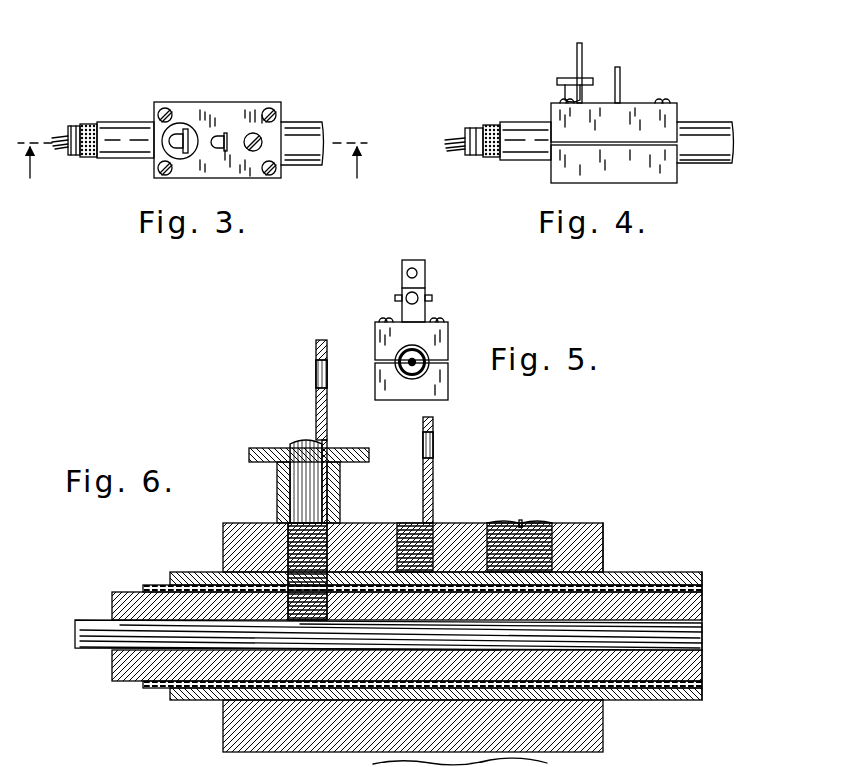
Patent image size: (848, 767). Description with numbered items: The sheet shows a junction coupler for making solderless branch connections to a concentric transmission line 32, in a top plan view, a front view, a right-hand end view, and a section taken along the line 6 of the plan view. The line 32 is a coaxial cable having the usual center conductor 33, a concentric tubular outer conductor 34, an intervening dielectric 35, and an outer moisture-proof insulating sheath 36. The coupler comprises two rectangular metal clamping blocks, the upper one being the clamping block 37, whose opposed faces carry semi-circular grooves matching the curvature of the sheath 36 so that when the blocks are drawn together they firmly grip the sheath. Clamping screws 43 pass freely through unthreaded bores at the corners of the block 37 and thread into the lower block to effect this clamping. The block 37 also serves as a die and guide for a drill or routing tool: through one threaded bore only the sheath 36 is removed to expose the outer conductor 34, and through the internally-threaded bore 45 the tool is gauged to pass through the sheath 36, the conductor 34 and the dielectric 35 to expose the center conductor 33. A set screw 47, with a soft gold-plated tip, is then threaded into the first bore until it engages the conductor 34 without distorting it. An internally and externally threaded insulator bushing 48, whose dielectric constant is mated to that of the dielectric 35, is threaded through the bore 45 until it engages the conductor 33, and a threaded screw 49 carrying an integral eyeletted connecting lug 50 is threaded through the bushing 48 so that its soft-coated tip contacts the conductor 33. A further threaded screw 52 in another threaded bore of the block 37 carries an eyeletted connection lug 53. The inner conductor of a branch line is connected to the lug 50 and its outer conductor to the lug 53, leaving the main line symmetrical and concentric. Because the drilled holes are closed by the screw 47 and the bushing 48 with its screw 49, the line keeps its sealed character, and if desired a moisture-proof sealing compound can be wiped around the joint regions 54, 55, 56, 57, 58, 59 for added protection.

In FIG. 3, the section line 6— 6 is at (192, 173).
In FIG. 3, the concentric transmission line 32 is at (312, 122).
In FIG. 4, the concentric transmission line 32 is at (712, 120).
In FIG. 5, the concentric transmission line 32 is at (437, 377).
In FIG. 6, the concentric transmission line 32 is at (680, 575).
In FIG. 3, the center conductor 33 is at (62, 140).
In FIG. 4, the center conductor 33 is at (452, 142).
In FIG. 5, the center conductor 33 is at (412, 368).
In FIG. 6, the center conductor 33 is at (75, 638).
In FIG. 3, the tubular outer conductor 34 is at (88, 124).
In FIG. 4, the tubular outer conductor 34 is at (492, 152).
In FIG. 5, the tubular outer conductor 34 is at (397, 362).
In FIG. 6, the tubular outer conductor 34 is at (160, 585).
In FIG. 3, the dielectric 35 is at (74, 126).
In FIG. 4, the dielectric 35 is at (475, 150).
In FIG. 6, the dielectric 35 is at (118, 592).
In FIG. 3, the outer insulating sheath 36 is at (120, 122).
In FIG. 4, the outer insulating sheath 36 is at (532, 152).
In FIG. 6, the outer insulating sheath 36 is at (198, 572).
In FIG. 3, the clamping block 37 is at (268, 172).
In FIG. 3, the clamping screws 43 is at (165, 108).
In FIG. 4, the clamping screws 43 is at (562, 100).
In FIG. 5, the clamping screws 43 is at (382, 322).
In FIG. 6, the internally-threaded bore 45 is at (401, 733).
In FIG. 6, the set screw 47 is at (530, 523).
In FIG. 3, the insulator bushing 48 is at (184, 153).
In FIG. 4, the insulator bushing 48 is at (560, 82).
In FIG. 5, the insulator bushing 48 is at (432, 298).
In FIG. 6, the insulator bushing 48 is at (277, 478).
In FIG. 3, the threaded screw 49 is at (165, 150).
In FIG. 4, the threaded screw 49 is at (575, 78).
In FIG. 6, the threaded screw 49 is at (300, 448).
In FIG. 3, the eyeletted connecting lug 50 is at (185, 130).
In FIG. 4, the eyeletted connecting lug 50 is at (580, 43).
In FIG. 5, the eyeletted connecting lug 50 is at (418, 262).
In FIG. 6, the eyeletted connecting lug 50 is at (316, 400).
In FIG. 6, the threaded screw 52 is at (405, 523).
In FIG. 3, the eyeletted connection lug 53 is at (226, 133).
In FIG. 4, the eyeletted connection lug 53 is at (620, 75).
In FIG. 5, the eyeletted connection lug 53 is at (425, 290).
In FIG. 6, the eyeletted connection lug 53 is at (433, 478).
In FIG. 6, the sealing region 54 is at (225, 545).
In FIG. 6, the sealing region 55 is at (280, 523).
In FIG. 6, the sealing region 56 is at (335, 452).
In FIG. 6, the sealing region 57 is at (480, 523).
In FIG. 6, the sealing region 58 is at (490, 523).
In FIG. 6, the sealing region 59 is at (615, 572).